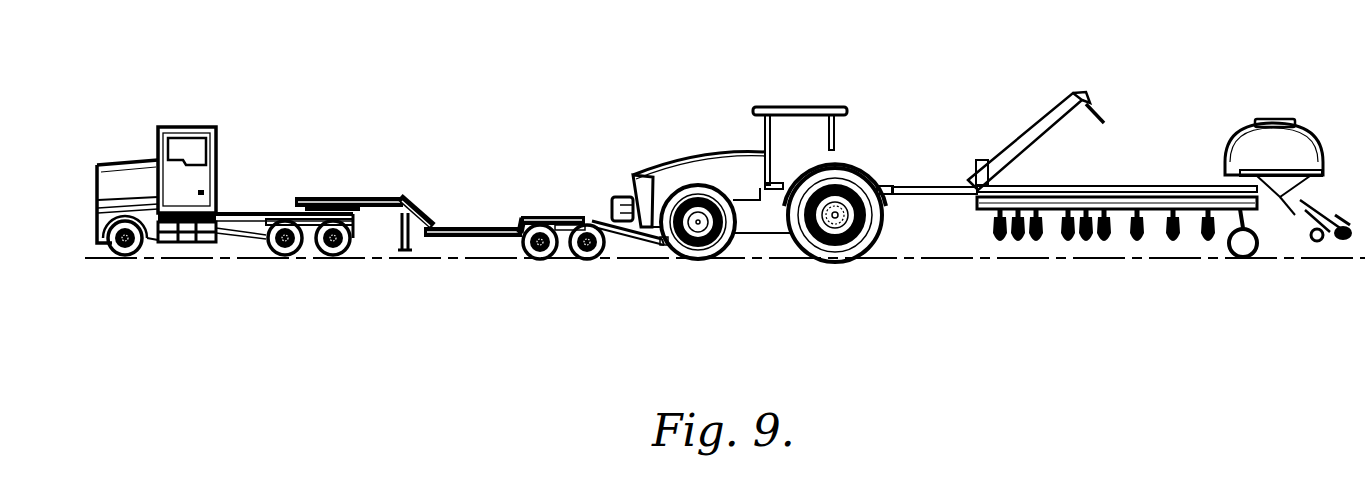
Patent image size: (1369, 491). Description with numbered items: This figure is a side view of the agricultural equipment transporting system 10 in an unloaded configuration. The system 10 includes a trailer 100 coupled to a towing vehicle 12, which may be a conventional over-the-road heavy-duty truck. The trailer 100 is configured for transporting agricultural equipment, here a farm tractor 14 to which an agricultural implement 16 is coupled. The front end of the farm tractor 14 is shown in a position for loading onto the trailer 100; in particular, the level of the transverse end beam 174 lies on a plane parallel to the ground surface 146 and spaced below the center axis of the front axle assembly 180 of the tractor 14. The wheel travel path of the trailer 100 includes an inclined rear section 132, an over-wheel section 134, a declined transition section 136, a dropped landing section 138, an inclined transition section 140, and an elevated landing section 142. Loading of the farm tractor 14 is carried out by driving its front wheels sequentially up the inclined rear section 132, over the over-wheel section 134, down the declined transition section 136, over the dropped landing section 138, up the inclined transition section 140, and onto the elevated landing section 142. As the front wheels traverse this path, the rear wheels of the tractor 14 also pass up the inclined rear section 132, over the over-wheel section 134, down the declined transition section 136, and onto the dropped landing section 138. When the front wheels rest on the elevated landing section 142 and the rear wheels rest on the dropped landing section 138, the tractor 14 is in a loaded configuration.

The agricultural equipment transporting system 10 is at (590, 60).
The towing vehicle 12 is at (196, 122).
The farm tractor 14 is at (752, 188).
The agricultural implement 16 is at (1112, 188).
The trailer 100 is at (428, 189).
The inclined rear section 132 is at (643, 243).
The over-wheel section 134 is at (560, 218).
The declined transition section 136 is at (520, 218).
The dropped landing section 138 is at (467, 225).
The inclined transition section 140 is at (417, 207).
The elevated landing section 142 is at (320, 197).
The ground surface 146 is at (943, 260).
The transverse end beam 174 is at (666, 245).
The front axle assembly 180 is at (723, 248).